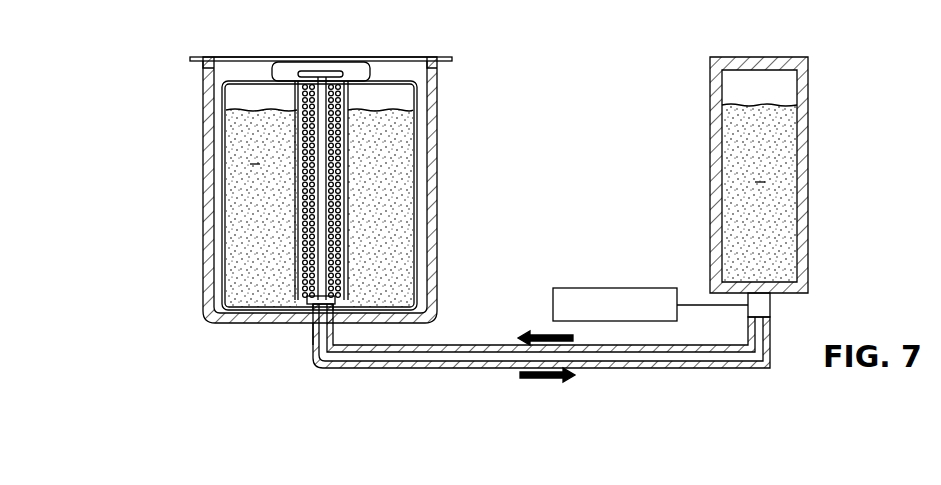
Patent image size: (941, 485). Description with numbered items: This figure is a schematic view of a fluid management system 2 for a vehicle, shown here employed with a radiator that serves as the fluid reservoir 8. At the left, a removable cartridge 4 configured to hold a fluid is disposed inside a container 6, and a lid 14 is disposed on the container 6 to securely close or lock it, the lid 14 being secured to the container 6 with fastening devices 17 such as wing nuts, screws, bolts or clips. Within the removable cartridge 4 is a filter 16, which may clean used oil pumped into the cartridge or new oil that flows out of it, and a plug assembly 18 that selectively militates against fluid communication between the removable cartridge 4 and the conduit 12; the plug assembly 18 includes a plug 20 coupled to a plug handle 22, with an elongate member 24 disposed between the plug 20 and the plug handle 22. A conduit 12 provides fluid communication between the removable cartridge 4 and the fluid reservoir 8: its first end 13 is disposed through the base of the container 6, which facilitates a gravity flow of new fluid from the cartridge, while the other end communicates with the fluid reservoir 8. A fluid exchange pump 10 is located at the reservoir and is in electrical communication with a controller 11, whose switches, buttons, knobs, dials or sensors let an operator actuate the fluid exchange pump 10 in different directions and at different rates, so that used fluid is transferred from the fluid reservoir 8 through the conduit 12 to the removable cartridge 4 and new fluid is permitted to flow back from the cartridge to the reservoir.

The fluid management system 2 is at (494, 25).
The removable cartridge 4 is at (420, 178).
The container 6 is at (437, 144).
The fluid reservoir 8 is at (808, 176).
The fluid exchange pump 10 is at (770, 305).
The controller 11 is at (636, 288).
The conduit 12 is at (480, 345).
The first end 13 is at (313, 326).
The lid 14 is at (393, 57).
The filter 16 is at (291, 224).
The fastening devices 17 is at (205, 56).
The plug assembly 18 is at (338, 205).
The plug 20 is at (308, 298).
The plug handle 22 is at (303, 71).
The elongate member 24 is at (326, 240).